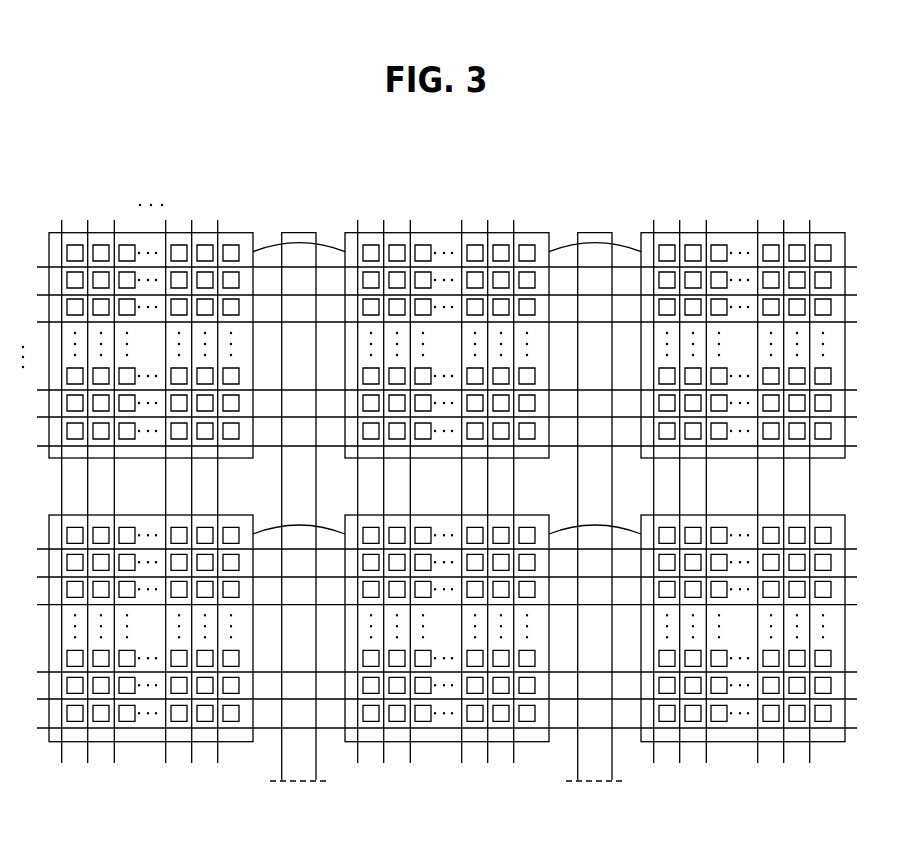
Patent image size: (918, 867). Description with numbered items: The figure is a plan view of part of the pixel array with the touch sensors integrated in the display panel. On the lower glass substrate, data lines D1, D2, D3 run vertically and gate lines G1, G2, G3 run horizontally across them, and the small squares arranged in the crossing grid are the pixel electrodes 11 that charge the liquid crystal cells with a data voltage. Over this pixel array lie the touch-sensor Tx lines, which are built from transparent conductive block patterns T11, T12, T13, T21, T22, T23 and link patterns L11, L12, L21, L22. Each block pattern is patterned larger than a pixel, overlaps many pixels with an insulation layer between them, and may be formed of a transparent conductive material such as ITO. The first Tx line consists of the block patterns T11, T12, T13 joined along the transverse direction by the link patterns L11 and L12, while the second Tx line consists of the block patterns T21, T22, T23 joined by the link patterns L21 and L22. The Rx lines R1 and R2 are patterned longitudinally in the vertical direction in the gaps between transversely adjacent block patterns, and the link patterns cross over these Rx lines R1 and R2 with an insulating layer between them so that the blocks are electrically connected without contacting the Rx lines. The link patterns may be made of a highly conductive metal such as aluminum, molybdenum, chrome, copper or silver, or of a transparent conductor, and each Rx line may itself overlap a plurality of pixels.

The pixel electrode 11 is at (181, 245).
The transparent conductive block pattern T11 is at (233, 232).
The transparent conductive block pattern T12 is at (529, 232).
The transparent conductive block pattern T13 is at (825, 232).
The transparent conductive block pattern T21 is at (238, 515).
The transparent conductive block pattern T22 is at (534, 515).
The transparent conductive block pattern T23 is at (830, 515).
The link pattern L11 is at (299, 243).
The link pattern L12 is at (595, 243).
The link pattern L21 is at (299, 525).
The link pattern L22 is at (595, 525).
The Rx line R1 is at (300, 778).
The Rx line R2 is at (596, 778).
The data line D1 is at (62, 478).
The data line D2 is at (88, 478).
The data line D3 is at (114, 478).
The gate line G1 is at (435, 267).
The gate line G2 is at (435, 295).
The gate line G3 is at (435, 322).